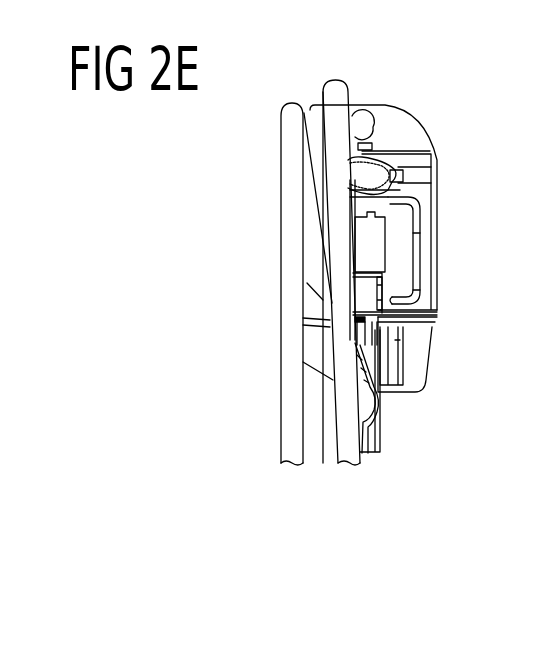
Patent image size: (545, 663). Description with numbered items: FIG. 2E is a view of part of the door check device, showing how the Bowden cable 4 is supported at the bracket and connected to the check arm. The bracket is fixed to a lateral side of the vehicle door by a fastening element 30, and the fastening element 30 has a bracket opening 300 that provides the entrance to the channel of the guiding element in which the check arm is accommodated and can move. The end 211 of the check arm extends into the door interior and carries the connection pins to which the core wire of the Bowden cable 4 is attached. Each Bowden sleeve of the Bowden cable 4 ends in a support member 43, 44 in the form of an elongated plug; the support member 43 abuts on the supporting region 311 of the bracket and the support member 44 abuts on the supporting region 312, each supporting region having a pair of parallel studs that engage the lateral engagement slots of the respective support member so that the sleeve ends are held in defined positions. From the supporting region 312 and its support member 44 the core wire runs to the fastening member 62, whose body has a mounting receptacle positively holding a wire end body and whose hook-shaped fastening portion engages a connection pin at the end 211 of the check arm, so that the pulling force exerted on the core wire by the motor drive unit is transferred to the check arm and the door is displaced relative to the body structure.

The Bowden cable 4 is at (282, 437).
The fastening element 30 is at (420, 132).
The support member 43 is at (386, 172).
The supporting region 311 is at (403, 173).
The end of the check arm 211 is at (367, 252).
The bracket opening 300 is at (415, 247).
The fastening member 62 is at (365, 293).
The supporting region 312 is at (372, 362).
The support member 44 is at (377, 420).